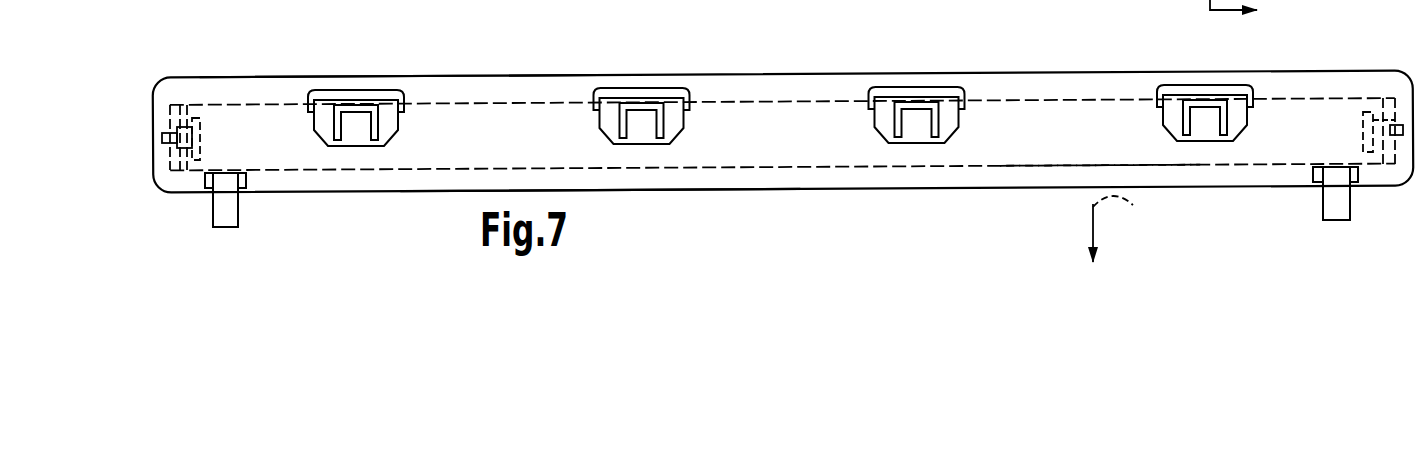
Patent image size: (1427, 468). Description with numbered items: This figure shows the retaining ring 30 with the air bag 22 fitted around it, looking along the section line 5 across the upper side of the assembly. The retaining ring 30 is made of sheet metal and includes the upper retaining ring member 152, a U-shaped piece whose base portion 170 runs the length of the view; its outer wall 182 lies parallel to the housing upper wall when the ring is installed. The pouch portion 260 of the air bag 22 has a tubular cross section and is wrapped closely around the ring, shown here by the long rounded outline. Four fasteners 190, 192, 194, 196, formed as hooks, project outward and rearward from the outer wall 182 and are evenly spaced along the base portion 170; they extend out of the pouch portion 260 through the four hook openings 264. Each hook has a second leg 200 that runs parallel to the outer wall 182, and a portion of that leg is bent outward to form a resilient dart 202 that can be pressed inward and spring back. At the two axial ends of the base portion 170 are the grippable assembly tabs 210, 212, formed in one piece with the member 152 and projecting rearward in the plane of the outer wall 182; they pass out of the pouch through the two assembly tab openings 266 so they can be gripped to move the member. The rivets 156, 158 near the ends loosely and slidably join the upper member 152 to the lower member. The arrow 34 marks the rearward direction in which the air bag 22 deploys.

The section line 5- 5 is at (1243, 10).
The air bag 22 is at (210, 75).
The air bag retaining ring 30 is at (578, 172).
The rearward direction 34 is at (1124, 229).
The upper retaining ring member 152 is at (871, 170).
The rivet 156 is at (1362, 128).
The rivet 158 is at (200, 143).
The base portion 170 is at (1053, 168).
The outer wall 182 is at (810, 134).
The fastener 190 is at (396, 178).
The fastener 192 is at (650, 146).
The fastener 194 is at (936, 144).
The fastener 196 is at (1191, 141).
The second leg 200 is at (340, 147).
The dart 202 is at (358, 125).
The assembly tab 210 is at (225, 228).
The assembly tab 212 is at (1333, 221).
The pouch portion 260 is at (295, 74).
The hook openings 264 is at (368, 91).
The assembly tab openings 266 is at (246, 188).